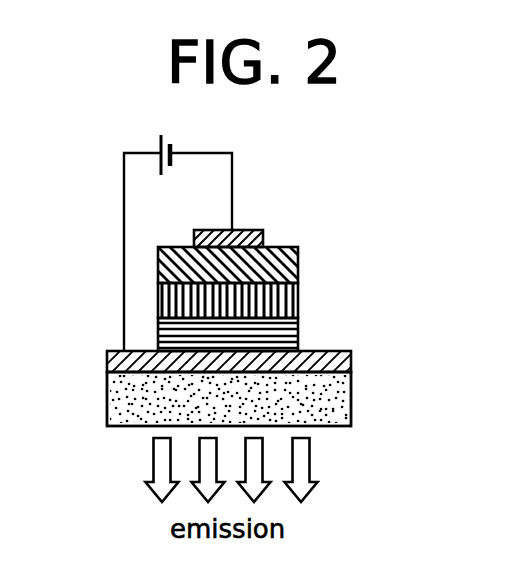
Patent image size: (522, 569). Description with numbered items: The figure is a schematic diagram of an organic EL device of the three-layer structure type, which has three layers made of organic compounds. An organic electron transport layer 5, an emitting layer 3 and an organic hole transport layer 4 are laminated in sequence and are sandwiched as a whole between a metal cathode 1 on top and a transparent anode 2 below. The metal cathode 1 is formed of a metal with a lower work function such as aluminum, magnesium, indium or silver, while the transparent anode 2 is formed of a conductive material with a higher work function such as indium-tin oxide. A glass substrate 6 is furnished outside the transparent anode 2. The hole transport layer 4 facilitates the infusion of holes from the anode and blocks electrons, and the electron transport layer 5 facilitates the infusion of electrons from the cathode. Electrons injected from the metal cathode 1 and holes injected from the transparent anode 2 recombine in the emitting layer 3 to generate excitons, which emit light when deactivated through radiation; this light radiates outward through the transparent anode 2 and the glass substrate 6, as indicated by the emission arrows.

The metal cathode 1 is at (265, 237).
The organic electron transport layer 5 is at (298, 262).
The emitting layer 3 is at (292, 303).
The organic hole transport layer 4 is at (298, 336).
The transparent anode 2 is at (342, 363).
The glass substrate 6 is at (345, 402).